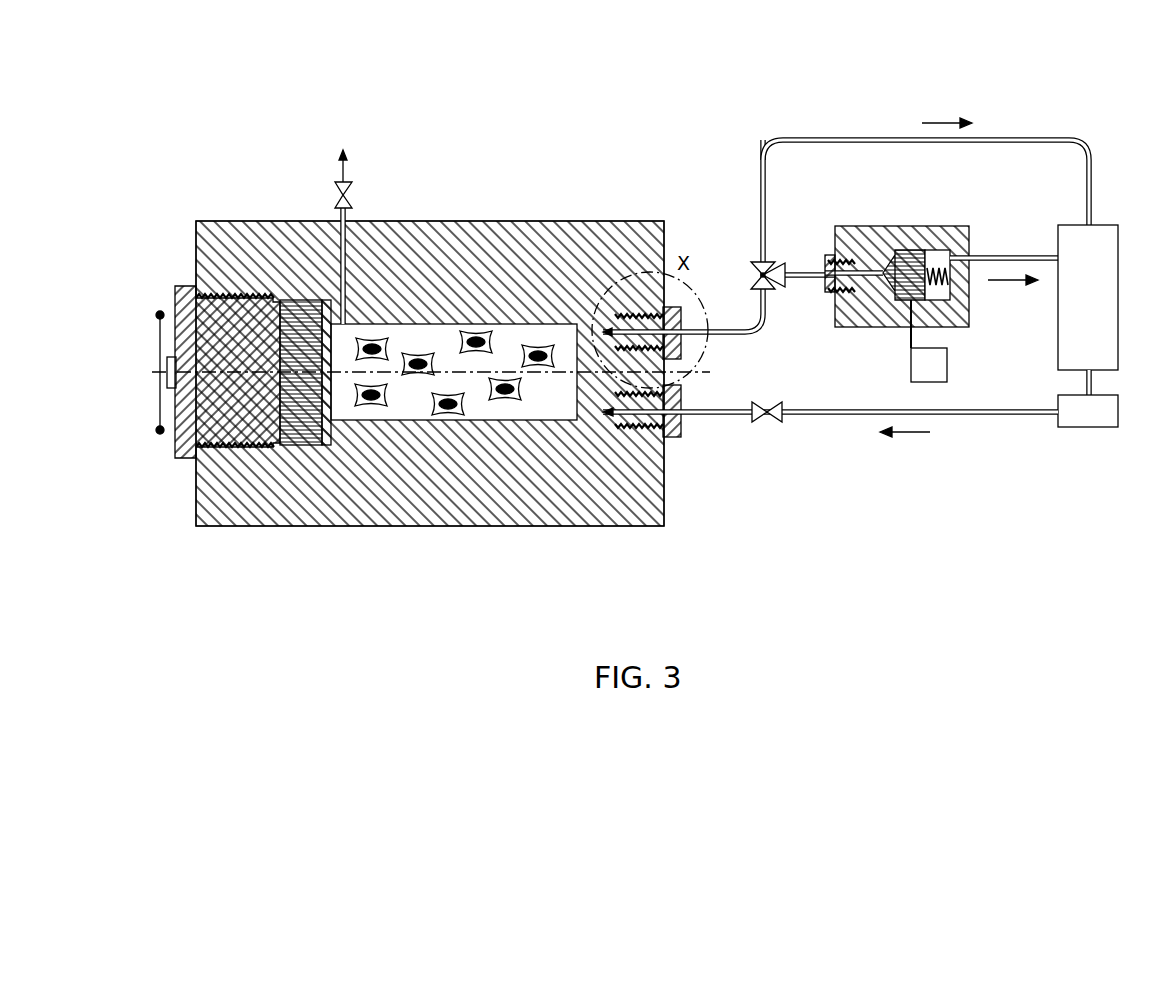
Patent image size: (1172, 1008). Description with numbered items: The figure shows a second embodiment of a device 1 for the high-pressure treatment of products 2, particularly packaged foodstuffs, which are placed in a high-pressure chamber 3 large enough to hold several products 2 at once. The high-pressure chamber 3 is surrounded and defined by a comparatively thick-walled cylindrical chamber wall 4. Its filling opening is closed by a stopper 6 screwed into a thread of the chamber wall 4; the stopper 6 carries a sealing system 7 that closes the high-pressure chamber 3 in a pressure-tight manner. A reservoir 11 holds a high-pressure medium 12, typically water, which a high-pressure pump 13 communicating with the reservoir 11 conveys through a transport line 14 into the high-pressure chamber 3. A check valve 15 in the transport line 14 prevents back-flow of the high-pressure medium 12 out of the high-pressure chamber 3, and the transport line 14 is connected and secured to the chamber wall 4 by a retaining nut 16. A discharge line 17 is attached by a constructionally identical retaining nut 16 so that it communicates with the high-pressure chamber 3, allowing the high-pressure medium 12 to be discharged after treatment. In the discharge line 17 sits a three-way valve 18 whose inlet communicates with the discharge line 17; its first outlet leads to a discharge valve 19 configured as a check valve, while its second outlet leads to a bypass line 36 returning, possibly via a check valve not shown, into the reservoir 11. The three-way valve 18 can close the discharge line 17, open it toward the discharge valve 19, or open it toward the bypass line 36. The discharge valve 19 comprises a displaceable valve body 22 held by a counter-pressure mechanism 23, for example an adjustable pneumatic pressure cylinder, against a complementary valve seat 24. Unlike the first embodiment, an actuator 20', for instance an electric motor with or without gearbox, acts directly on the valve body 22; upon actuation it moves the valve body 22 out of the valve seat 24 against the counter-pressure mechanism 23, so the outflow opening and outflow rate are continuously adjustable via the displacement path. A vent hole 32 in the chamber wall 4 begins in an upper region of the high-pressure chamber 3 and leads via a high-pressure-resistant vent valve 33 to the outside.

The device 1 is at (208, 80).
The products 2 is at (445, 412).
The high-pressure chamber 3 is at (535, 412).
The chamber wall 4 is at (585, 500).
The stopper 6 is at (185, 440).
The sealing system 7 is at (300, 445).
The reservoir 11 is at (1118, 258).
The high-pressure medium 12 is at (1118, 358).
The high-pressure pump 13 is at (1077, 427).
The transport line 14 is at (962, 418).
The check valve 15 is at (766, 422).
The retaining nut 16 is at (683, 345).
The discharge line 17 is at (770, 328).
The three-way valve 18 is at (752, 270).
The discharge valve 19 is at (824, 230).
The actuator 20' is at (950, 341).
The valve body 22 is at (938, 258).
The counter-pressure mechanism 23 is at (969, 288).
The valve seat 24 is at (890, 250).
The vent hole 32 is at (346, 270).
The vent valve 33 is at (352, 188).
The bypass line 36 is at (1021, 138).